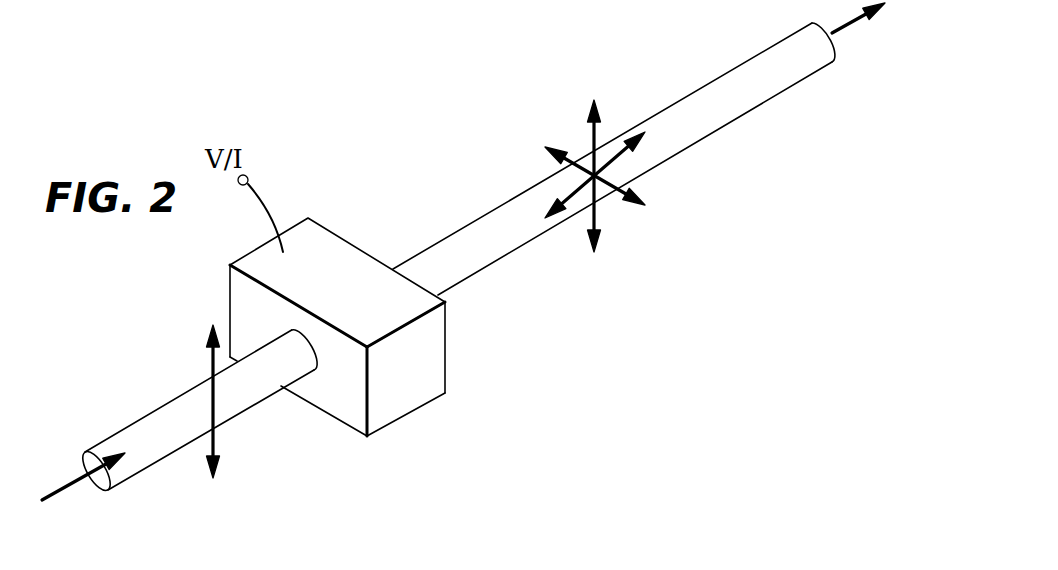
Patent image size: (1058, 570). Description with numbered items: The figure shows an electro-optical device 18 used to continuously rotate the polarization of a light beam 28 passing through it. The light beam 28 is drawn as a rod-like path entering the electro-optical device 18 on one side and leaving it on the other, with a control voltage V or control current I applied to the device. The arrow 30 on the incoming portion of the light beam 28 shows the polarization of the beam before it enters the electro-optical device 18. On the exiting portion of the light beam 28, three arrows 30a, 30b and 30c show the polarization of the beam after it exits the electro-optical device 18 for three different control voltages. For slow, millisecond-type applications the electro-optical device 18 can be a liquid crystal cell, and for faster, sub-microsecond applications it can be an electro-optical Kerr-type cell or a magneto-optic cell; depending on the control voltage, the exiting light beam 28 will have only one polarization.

The electro-optical device 18 is at (337, 252).
The light beam 28 is at (163, 413).
The arrow 30 is at (207, 365).
The arrow 30a is at (590, 133).
The arrow 30b is at (618, 138).
The arrow 30c is at (613, 180).